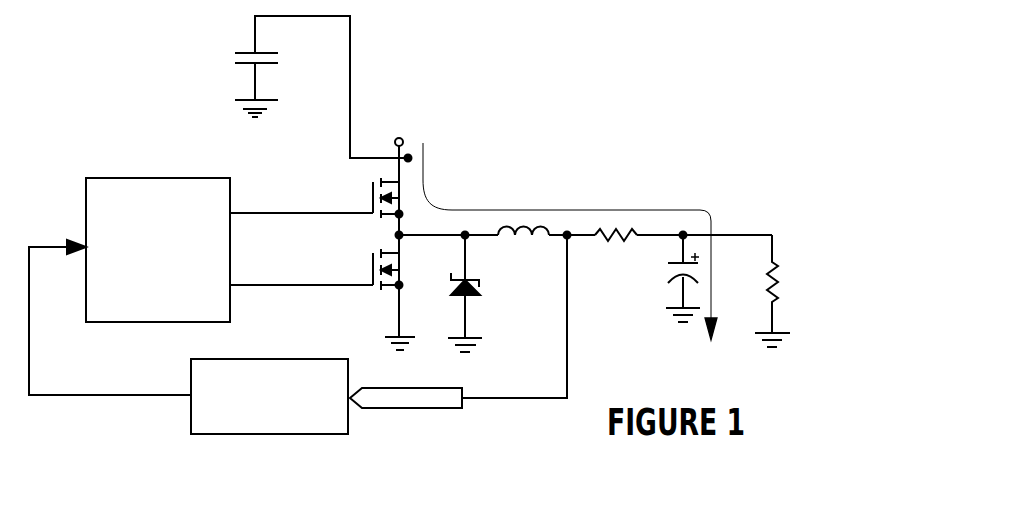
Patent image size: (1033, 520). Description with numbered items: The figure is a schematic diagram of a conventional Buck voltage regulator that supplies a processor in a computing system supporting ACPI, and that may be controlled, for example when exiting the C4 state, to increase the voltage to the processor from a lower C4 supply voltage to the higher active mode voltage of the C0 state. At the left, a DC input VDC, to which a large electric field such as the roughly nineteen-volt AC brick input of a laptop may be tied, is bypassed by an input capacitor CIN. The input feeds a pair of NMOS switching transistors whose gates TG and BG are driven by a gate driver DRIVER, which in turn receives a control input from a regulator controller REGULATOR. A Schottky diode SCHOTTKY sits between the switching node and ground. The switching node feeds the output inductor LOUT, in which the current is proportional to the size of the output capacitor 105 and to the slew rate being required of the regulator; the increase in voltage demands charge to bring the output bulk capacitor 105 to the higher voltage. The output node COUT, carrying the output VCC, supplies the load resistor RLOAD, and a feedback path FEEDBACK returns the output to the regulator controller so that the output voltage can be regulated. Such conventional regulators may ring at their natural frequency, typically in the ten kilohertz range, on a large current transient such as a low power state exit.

The output capacitor 105 is at (672, 278).
The input capacitor CIN is at (314, 89).
The V_DC input VDC is at (406, 146).
The NMOS transistors NMOS is at (322, 261).
The output inductor LOUT is at (512, 238).
The Schottky diode SCHOTTKY is at (515, 350).
The feedback FEEDBACK is at (462, 408).
The regulator controller REGULATOR is at (188, 337).
The driver DRIVER is at (158, 250).
The load resistor RLOAD is at (804, 291).
The output voltage COUT is at (657, 241).